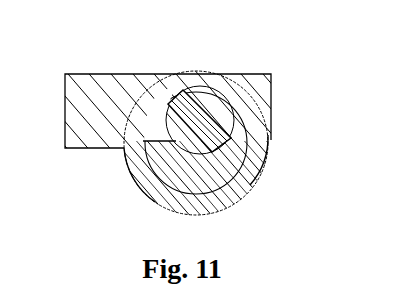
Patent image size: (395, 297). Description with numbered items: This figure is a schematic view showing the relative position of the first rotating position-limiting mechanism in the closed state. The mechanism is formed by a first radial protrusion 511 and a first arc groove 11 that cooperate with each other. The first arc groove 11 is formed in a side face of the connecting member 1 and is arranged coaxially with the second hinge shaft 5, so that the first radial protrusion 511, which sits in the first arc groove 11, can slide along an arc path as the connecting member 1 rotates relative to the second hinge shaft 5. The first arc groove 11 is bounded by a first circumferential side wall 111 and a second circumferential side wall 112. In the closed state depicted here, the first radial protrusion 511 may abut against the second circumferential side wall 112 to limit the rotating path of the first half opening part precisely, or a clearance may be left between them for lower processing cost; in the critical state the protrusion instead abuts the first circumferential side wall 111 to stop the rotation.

The connecting member 1 is at (102, 103).
The first arc groove 11 is at (160, 103).
The first circumferential side wall 111 is at (140, 183).
The second circumferential side wall 112 is at (327, 157).
The second hinge shaft 5 is at (263, 187).
The first radial protrusion 511 is at (198, 90).